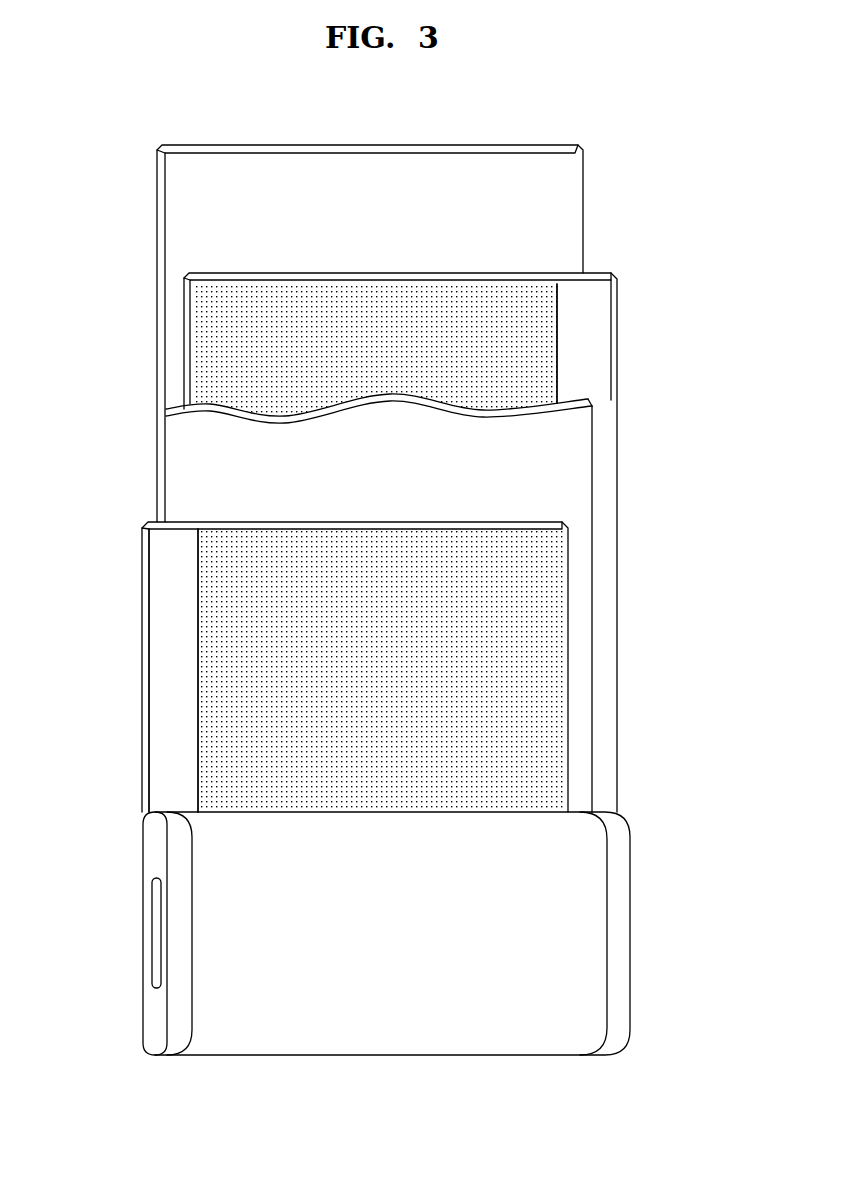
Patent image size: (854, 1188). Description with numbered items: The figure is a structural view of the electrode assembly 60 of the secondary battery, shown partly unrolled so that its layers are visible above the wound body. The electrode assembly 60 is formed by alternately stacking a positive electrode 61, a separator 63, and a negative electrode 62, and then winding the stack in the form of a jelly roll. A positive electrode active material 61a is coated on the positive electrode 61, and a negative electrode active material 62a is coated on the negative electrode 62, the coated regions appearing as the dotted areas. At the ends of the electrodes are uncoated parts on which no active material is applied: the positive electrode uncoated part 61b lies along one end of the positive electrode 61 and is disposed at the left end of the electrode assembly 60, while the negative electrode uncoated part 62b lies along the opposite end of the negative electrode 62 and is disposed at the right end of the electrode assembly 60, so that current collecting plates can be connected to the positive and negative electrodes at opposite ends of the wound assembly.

The electrode assembly 60 is at (393, 1028).
The positive electrode 61 is at (120, 608).
The positive electrode active material 61a is at (548, 683).
The positive electrode uncoated part 61b is at (165, 724).
The negative electrode 62 is at (174, 363).
The negative electrode active material 62a is at (196, 328).
The negative electrode uncoated part 62b is at (602, 350).
The separator 63 is at (146, 226).